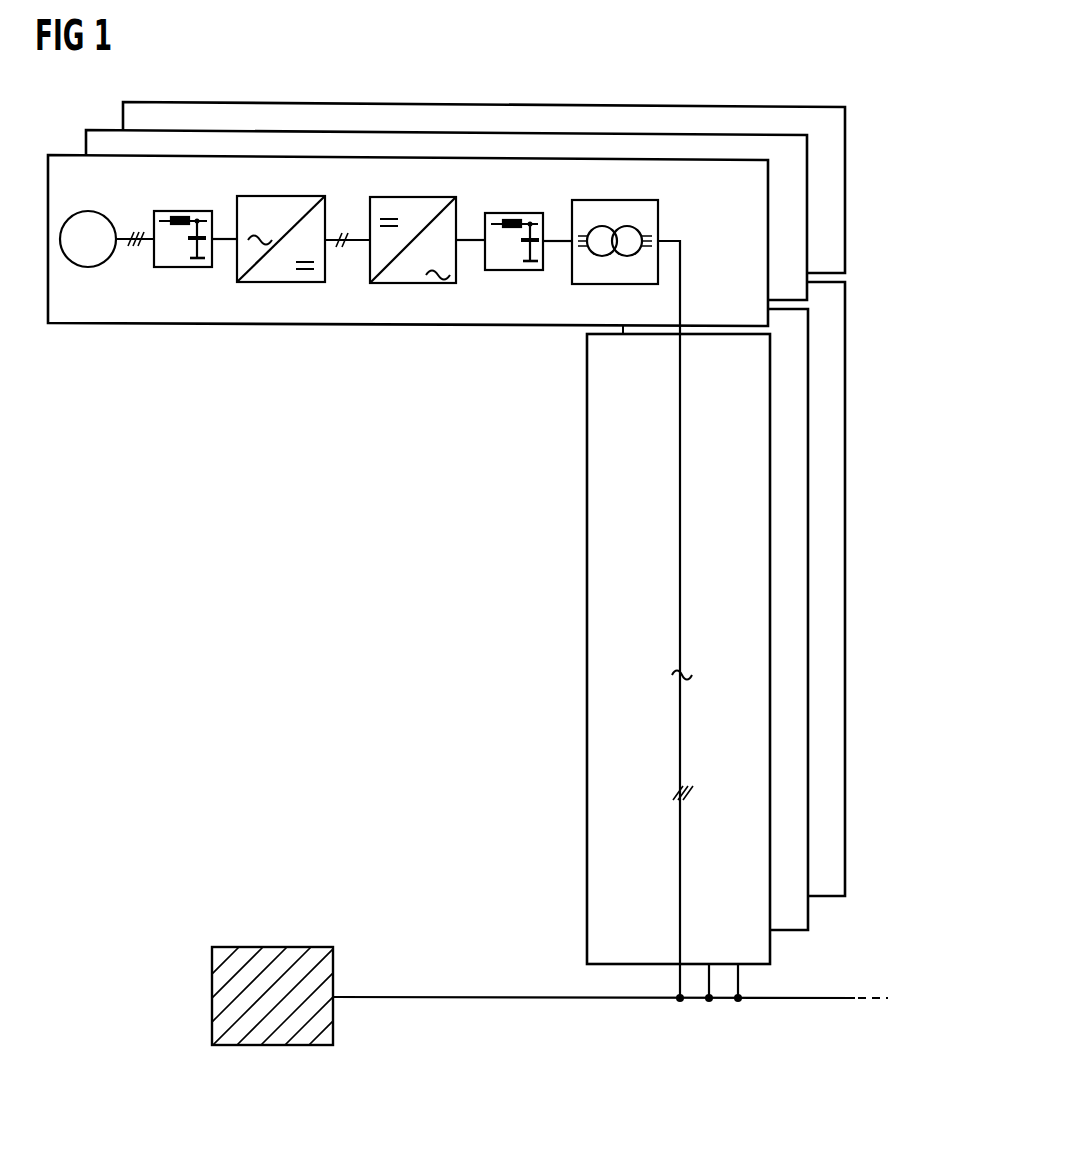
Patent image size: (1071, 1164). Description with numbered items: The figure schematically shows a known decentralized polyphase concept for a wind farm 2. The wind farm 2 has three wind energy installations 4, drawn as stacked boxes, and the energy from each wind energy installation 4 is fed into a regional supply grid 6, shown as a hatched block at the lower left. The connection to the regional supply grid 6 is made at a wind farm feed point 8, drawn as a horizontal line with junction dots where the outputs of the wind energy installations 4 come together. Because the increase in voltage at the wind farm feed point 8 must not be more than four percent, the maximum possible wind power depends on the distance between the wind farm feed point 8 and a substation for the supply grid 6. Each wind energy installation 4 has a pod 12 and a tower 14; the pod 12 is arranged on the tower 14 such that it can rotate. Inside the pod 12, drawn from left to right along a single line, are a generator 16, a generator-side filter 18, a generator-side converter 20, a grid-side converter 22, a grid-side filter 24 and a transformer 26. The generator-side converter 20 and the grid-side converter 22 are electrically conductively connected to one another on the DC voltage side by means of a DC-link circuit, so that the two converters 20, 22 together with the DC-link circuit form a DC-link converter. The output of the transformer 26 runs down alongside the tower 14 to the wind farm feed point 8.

The wind farm 2 is at (210, 681).
The wind energy installation 4 is at (697, 157).
The regional supply grid 6 is at (281, 945).
The wind farm feed point 8 is at (728, 1000).
The pod 12 is at (140, 323).
The tower 14 is at (586, 648).
The generator 16 is at (88, 267).
The generator-side filter 18 is at (186, 267).
The generator-side converter 20 is at (277, 282).
The grid-side converter 22 is at (400, 283).
The grid-side filter 24 is at (493, 270).
The transformer 26 is at (580, 284).